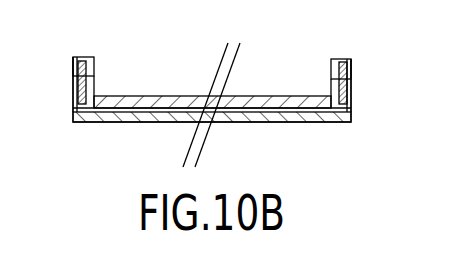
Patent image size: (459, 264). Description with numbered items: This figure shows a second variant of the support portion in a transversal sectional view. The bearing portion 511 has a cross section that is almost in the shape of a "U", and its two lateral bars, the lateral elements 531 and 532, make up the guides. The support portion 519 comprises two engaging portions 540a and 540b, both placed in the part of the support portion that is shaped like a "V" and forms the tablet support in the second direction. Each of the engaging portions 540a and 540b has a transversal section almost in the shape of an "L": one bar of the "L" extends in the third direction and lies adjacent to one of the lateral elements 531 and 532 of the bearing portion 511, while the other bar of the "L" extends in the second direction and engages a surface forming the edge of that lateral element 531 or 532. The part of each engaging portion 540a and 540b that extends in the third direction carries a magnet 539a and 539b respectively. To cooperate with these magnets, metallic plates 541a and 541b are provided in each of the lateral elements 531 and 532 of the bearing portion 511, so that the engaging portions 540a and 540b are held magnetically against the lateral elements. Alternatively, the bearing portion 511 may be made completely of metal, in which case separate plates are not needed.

The bearing portion 511 is at (186, 96).
The support portion 519 is at (283, 122).
The lateral element 531 is at (90, 86).
The lateral element 532 is at (330, 83).
The magnet 539a is at (85, 60).
The magnet 539b is at (333, 61).
The engaging portion 540a is at (73, 80).
The engaging portion 540b is at (350, 80).
The metallic plate 541a is at (79, 86).
The metallic plate 541b is at (347, 88).